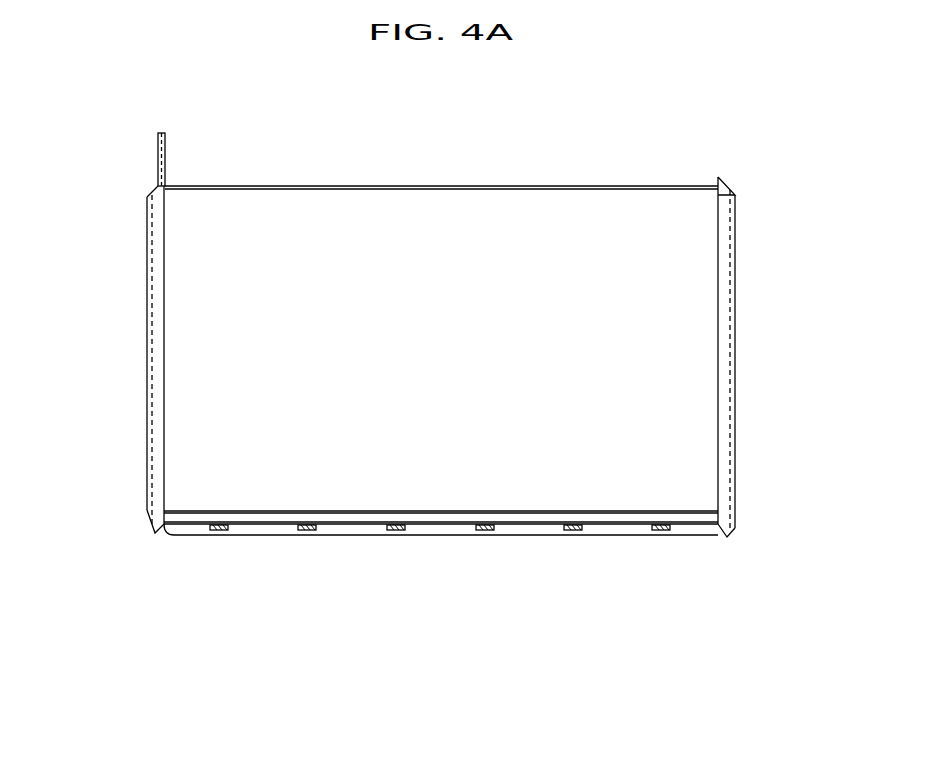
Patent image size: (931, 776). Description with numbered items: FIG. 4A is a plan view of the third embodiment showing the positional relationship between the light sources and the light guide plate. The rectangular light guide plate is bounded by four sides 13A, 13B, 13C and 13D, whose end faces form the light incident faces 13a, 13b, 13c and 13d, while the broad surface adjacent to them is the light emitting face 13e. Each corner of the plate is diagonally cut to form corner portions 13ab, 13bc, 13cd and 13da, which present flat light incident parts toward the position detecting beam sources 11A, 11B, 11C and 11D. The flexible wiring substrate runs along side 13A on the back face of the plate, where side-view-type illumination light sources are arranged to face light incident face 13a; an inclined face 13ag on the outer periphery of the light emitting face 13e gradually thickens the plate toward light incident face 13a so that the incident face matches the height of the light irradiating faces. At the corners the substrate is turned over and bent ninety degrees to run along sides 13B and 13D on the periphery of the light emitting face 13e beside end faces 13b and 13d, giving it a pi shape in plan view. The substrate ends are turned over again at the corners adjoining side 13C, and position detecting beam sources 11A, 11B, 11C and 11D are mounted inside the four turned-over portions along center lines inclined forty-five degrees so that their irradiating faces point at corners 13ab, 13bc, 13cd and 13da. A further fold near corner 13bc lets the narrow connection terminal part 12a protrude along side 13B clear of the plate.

The light incident face 13c is at (362, 186).
The side 13C is at (268, 186).
The light emitting face 13e is at (508, 238).
The connection terminal part 12a is at (165, 140).
The light incident face 13b is at (150, 392).
The side 13B is at (150, 320).
The corner portion 13bc is at (150, 185).
The position detecting beam source 11B is at (165, 195).
The position detecting beam source 11A is at (172, 512).
The corner portion 13ab is at (152, 522).
The light incident face 13d is at (735, 265).
The side 13D is at (735, 330).
The corner portion 13cd is at (727, 190).
The position detecting beam source 11C is at (718, 195).
The position detecting beam source 11D is at (718, 512).
The corner portion 13da is at (728, 537).
The light incident face 13a is at (528, 524).
The side 13A is at (357, 530).
The inclined face 13ag is at (658, 523).